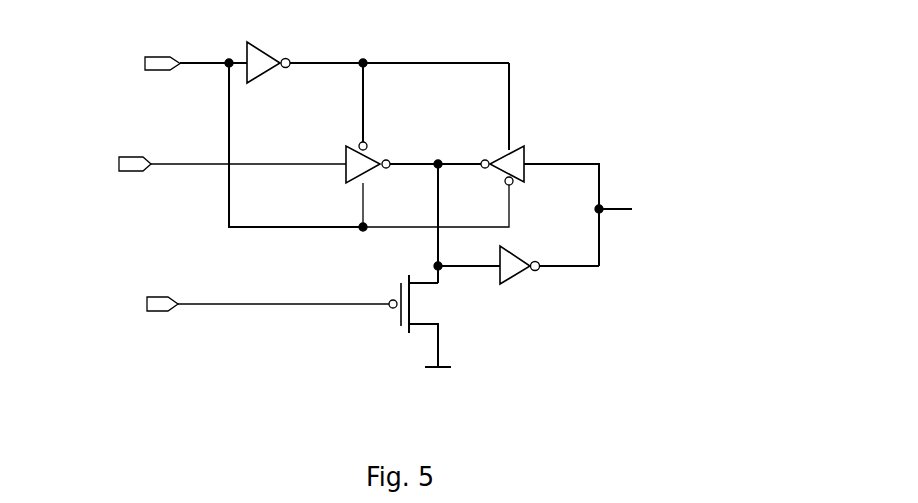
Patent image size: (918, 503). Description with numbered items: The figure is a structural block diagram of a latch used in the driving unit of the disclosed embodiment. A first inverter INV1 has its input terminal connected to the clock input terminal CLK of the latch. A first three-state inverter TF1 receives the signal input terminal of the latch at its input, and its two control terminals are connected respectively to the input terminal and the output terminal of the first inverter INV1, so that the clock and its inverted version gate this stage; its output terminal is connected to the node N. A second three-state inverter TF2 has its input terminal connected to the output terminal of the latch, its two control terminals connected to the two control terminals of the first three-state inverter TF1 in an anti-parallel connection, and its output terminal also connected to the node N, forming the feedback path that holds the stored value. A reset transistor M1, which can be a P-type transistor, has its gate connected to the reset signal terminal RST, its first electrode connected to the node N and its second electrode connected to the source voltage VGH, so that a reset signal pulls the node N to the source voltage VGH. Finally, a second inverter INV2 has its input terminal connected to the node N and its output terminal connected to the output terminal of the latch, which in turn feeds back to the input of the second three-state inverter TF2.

The clock input terminal CLK is at (240, 125).
The first inverter INV1 is at (368, 79).
The first 3-state inverter TF1 is at (411, 173).
The node N is at (441, 202).
The second 3-state inverter TF2 is at (540, 194).
The second inverter INV2 is at (518, 285).
The reset signal terminal RST is at (241, 304).
The reset transistor M1 is at (396, 321).
The source voltage VGH is at (435, 388).